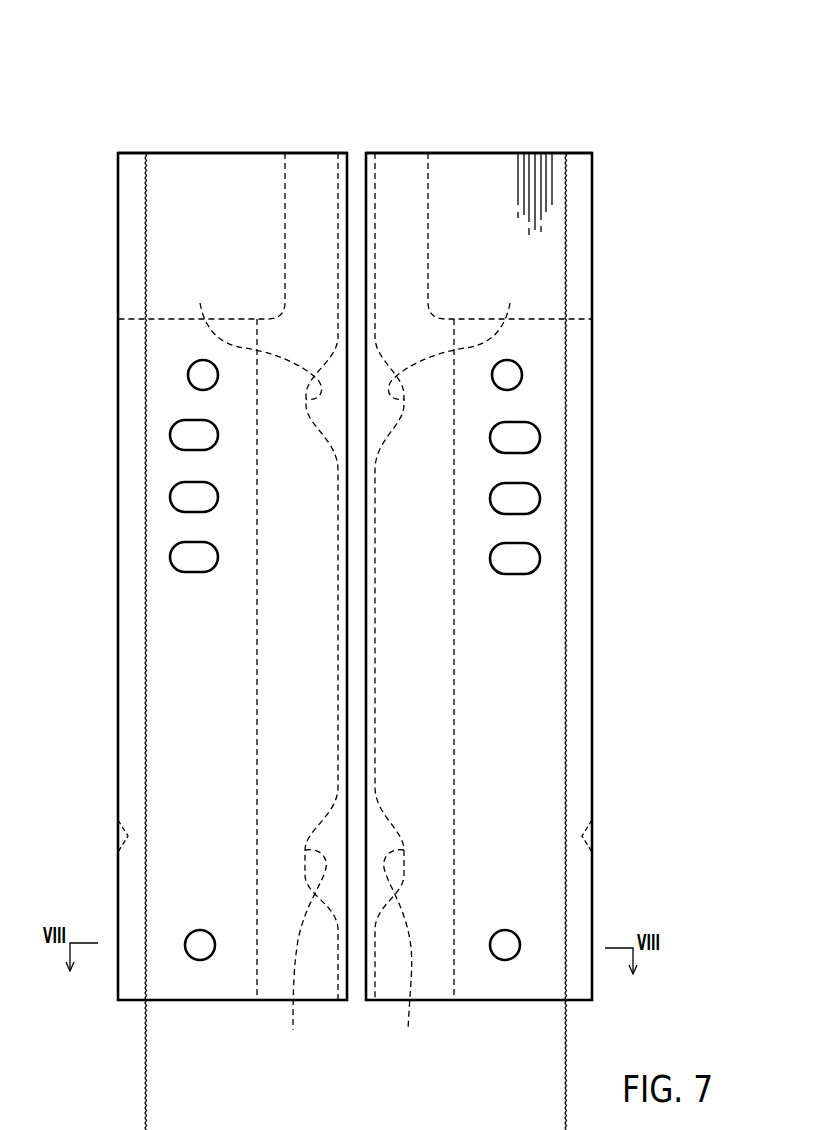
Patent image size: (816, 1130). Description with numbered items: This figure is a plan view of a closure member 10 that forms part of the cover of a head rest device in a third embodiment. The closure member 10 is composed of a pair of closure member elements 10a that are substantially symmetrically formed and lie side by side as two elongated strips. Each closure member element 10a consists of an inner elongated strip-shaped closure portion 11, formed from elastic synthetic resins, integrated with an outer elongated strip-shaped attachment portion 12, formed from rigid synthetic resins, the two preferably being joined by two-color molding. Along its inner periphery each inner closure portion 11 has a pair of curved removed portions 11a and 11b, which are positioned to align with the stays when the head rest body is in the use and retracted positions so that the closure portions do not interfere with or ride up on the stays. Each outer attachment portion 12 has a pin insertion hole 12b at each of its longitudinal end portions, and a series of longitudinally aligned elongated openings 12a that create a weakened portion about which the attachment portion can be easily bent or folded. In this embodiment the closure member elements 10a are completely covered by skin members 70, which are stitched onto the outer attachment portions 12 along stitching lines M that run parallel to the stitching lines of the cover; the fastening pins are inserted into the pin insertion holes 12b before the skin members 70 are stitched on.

The closure member 10 is at (605, 126).
The closure member element 10a is at (228, 147).
The skin member 70 is at (266, 168).
The inner elongated strip-shaped closure portion 11 is at (280, 647).
The curved removed portion 11a is at (354, 334).
The curved removed portion 11b is at (350, 953).
The outer elongated strip-shaped attachment portion 12 is at (137, 367).
The elongated opening 12a is at (185, 555).
The pin insertion hole 12b is at (200, 372).
The stitching line M is at (140, 757).